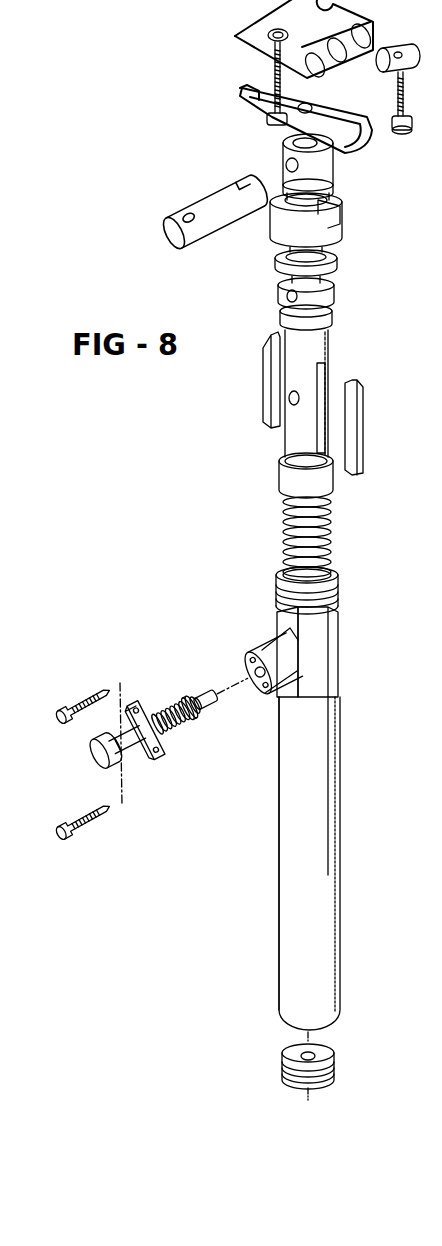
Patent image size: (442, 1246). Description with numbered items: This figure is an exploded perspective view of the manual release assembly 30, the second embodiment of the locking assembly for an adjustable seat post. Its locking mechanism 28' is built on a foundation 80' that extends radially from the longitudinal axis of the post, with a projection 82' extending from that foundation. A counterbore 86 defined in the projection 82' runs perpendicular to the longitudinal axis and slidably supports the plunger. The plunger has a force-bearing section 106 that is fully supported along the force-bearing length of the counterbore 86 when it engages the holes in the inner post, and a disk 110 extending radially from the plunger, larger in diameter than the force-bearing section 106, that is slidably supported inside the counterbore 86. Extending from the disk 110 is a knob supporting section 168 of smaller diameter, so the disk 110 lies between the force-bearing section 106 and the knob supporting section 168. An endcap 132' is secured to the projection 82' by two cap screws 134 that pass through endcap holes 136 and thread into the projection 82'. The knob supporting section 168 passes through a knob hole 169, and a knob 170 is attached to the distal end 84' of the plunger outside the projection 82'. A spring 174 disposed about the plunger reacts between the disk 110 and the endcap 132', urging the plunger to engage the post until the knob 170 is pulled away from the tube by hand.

The locking mechanism 28' is at (267, 758).
The manual release assembly 30 is at (304, 646).
The foundation 80' is at (333, 632).
The projection 82' is at (265, 620).
The distal end 84' is at (255, 655).
The counterbore 86 is at (283, 688).
The force-bearing section 106 is at (213, 701).
The disk 110 is at (183, 697).
The endcap 132' is at (173, 673).
The cap screws 134 is at (82, 703).
The endcap holes 136 is at (141, 701).
The knob supporting section 168 is at (100, 734).
The knob hole 169 is at (167, 734).
The knob 170 is at (97, 757).
The spring 174 is at (200, 716).